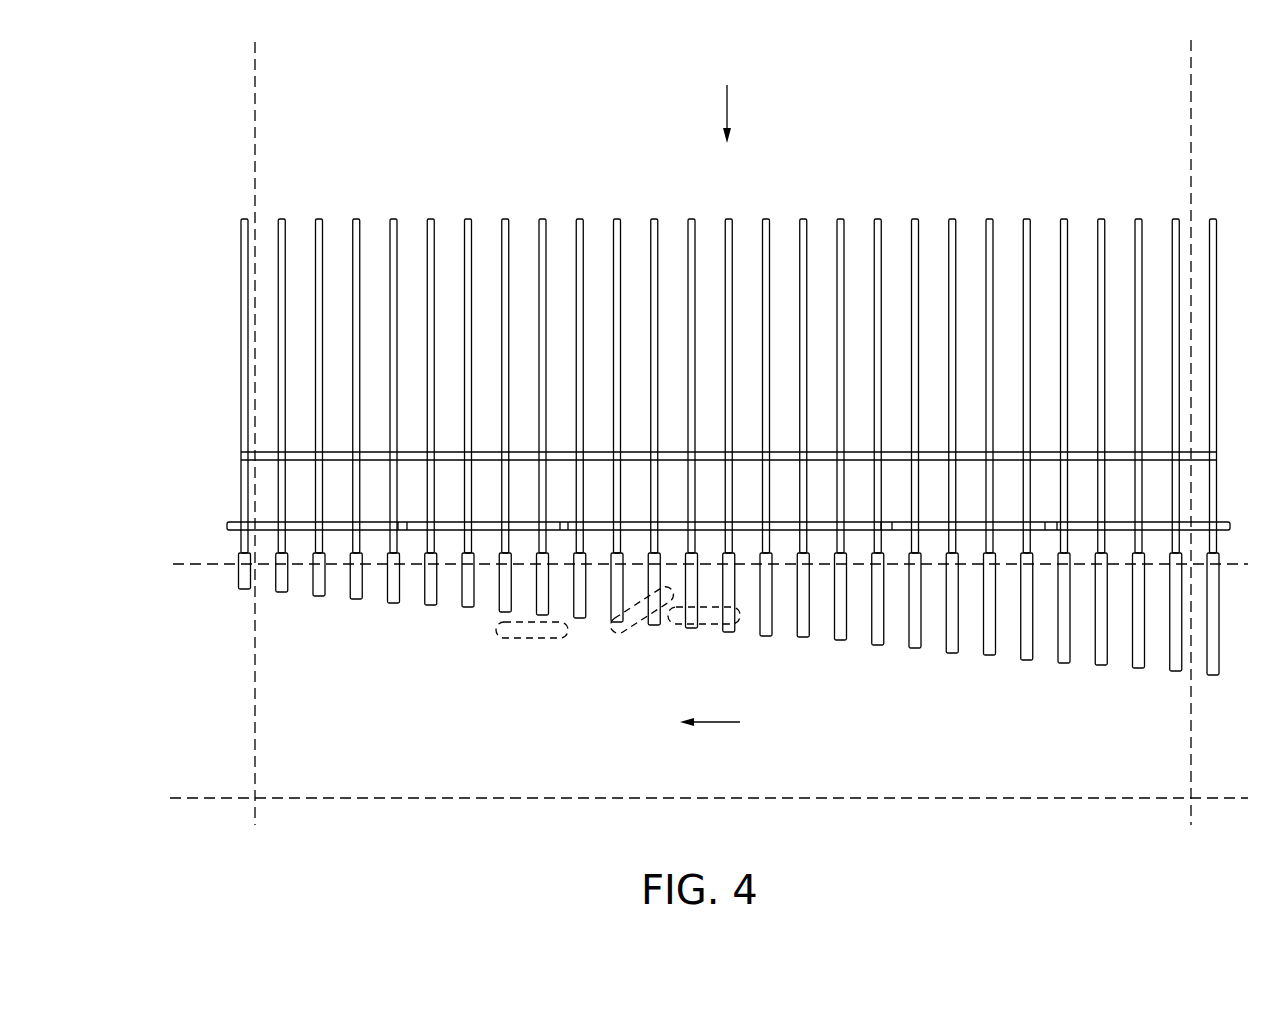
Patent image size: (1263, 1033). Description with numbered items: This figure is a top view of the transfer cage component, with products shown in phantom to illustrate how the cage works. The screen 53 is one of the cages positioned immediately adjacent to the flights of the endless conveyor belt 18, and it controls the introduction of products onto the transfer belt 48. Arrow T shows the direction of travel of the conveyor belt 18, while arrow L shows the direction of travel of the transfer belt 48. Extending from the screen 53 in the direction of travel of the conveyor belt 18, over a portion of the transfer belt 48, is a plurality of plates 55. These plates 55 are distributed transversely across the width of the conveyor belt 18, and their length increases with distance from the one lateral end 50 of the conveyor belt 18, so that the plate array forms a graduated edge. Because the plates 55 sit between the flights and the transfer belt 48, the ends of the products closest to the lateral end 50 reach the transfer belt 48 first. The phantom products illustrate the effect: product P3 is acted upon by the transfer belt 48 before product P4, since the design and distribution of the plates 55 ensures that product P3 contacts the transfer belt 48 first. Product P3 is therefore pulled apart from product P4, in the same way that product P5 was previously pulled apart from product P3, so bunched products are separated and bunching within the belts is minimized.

The conveyor belt 18 is at (1191, 137).
The transfer belt 48 is at (195, 562).
The lateral end of the conveyor belt 50 is at (249, 128).
The screen 53 is at (226, 343).
The plates 55 is at (238, 575).
The product P3 is at (628, 633).
The product P4 is at (707, 623).
The product P5 is at (541, 638).
The arrow indicating direction of travel of the conveyor belt T is at (727, 111).
The arrow indicating direction of travel of the transfer belt L is at (712, 723).